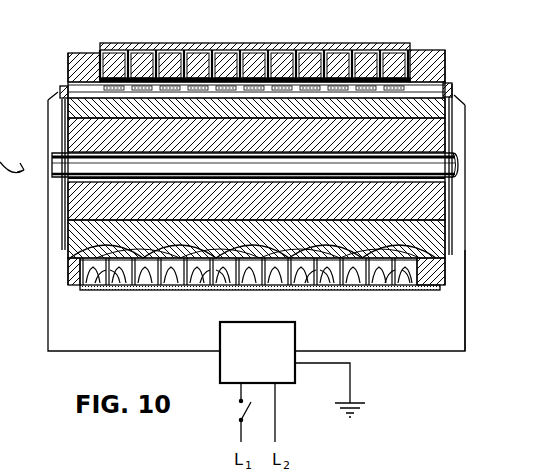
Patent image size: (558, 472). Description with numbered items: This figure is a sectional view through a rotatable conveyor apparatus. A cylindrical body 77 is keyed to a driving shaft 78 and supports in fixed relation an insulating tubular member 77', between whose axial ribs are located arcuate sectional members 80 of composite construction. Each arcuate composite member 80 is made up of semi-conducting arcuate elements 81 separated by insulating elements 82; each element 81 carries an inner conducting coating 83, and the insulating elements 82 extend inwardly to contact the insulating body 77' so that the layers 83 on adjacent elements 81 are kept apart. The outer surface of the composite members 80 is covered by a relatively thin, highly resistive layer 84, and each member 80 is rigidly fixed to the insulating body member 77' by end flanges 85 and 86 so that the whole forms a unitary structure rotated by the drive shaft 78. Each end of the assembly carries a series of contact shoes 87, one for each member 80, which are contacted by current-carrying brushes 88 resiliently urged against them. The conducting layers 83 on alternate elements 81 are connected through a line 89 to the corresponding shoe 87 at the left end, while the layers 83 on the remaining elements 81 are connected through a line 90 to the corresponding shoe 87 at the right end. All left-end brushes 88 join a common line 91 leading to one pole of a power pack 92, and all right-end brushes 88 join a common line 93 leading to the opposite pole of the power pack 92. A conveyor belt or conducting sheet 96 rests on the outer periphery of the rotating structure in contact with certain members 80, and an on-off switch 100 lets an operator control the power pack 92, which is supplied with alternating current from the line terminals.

The cylindrical body 77 is at (229, 220).
The insulating tubular member 77' is at (229, 271).
The driving shaft 78 is at (56, 173).
The arcuate sectional member 80 is at (84, 46).
The arcuate element 81 is at (420, 322).
The insulating element 82 is at (430, 300).
The inner coating 83 is at (222, 244).
The thin layer 84 is at (420, 48).
The end flange 85 is at (68, 60).
The end flange 86 is at (445, 50).
The contact shoe 87 is at (62, 85).
The current-carrying brush 88 is at (60, 93).
The line 89 is at (68, 104).
The line 90 is at (352, 88).
The common line 91 is at (48, 302).
The power pack 92 is at (273, 360).
The common line 93 is at (465, 303).
The conveyor belt 96 is at (264, 48).
The on-off switch 100 is at (236, 409).